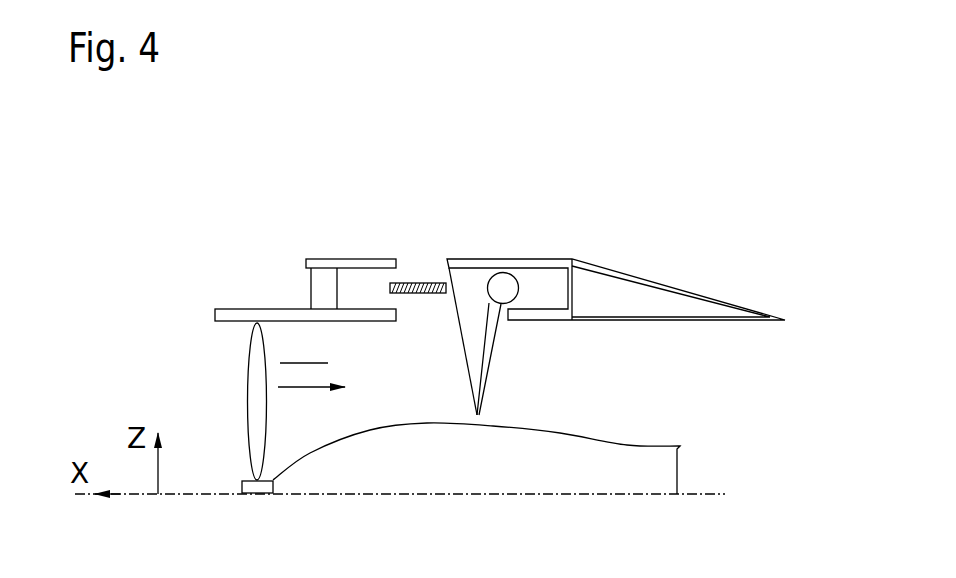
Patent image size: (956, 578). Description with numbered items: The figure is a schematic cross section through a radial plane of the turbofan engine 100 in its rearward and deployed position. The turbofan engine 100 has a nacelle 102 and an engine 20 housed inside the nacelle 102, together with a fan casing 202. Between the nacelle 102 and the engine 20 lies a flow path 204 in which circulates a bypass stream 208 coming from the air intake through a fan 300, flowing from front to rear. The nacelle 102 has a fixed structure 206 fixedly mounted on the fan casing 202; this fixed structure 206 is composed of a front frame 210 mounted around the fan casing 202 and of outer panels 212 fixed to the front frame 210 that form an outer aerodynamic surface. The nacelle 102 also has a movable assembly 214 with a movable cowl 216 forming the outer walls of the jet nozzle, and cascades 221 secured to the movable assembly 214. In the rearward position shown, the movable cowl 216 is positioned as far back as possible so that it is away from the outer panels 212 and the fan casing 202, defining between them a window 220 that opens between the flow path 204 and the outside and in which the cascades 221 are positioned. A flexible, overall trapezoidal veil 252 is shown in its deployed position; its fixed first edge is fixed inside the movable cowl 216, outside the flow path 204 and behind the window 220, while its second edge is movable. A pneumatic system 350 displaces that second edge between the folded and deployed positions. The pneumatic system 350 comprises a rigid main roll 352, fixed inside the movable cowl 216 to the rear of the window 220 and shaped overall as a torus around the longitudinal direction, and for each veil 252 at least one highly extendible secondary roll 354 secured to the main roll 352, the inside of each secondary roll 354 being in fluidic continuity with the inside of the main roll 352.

The turbofan engine 100 is at (703, 208).
The nacelle 102 is at (603, 195).
The engine 20 is at (677, 450).
The fan casing 202 is at (228, 311).
The flow path 204 is at (304, 350).
The fixed structure 206 is at (258, 213).
The bypass stream 208 is at (311, 407).
The front frame 210 is at (327, 282).
The outer panels 212 is at (365, 263).
The movable assembly 214 is at (693, 282).
The movable cowl 216 is at (623, 288).
The window 220 is at (450, 190).
The cascades 221 is at (400, 288).
The veil 252 is at (465, 345).
The fan 300 is at (257, 398).
The pneumatic system 350 is at (530, 200).
The main roll 352 is at (503, 288).
The secondary roll 354 is at (490, 360).